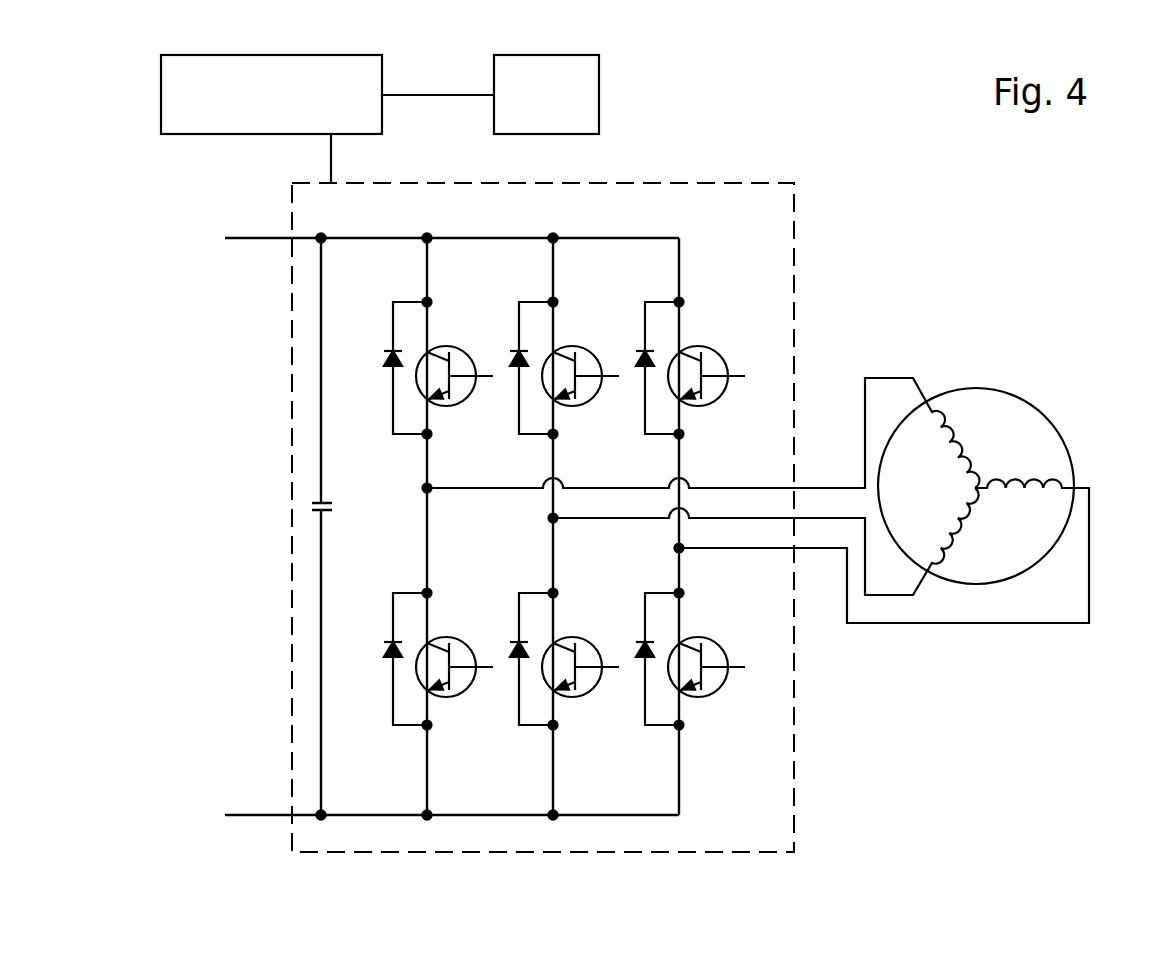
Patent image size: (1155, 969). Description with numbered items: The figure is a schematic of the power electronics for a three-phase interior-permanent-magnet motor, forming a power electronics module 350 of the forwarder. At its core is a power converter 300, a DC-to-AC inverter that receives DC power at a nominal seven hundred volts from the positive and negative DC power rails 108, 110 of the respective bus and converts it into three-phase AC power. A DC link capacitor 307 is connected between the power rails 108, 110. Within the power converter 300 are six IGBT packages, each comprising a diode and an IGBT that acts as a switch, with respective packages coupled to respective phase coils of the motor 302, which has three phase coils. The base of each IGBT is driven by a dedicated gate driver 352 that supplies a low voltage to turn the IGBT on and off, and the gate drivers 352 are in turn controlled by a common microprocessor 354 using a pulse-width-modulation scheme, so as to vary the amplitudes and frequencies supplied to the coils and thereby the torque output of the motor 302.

The positive DC power rail 108 is at (237, 238).
The negative DC power rail 110 is at (238, 815).
The power converter 300 is at (748, 223).
The three-phase interior-permanent-magnet motor 302 is at (1022, 440).
The DC link capacitor 307 is at (329, 502).
The power electronics module 350 is at (773, 108).
The gate driver 352 is at (161, 88).
The microprocessor 354 is at (599, 80).